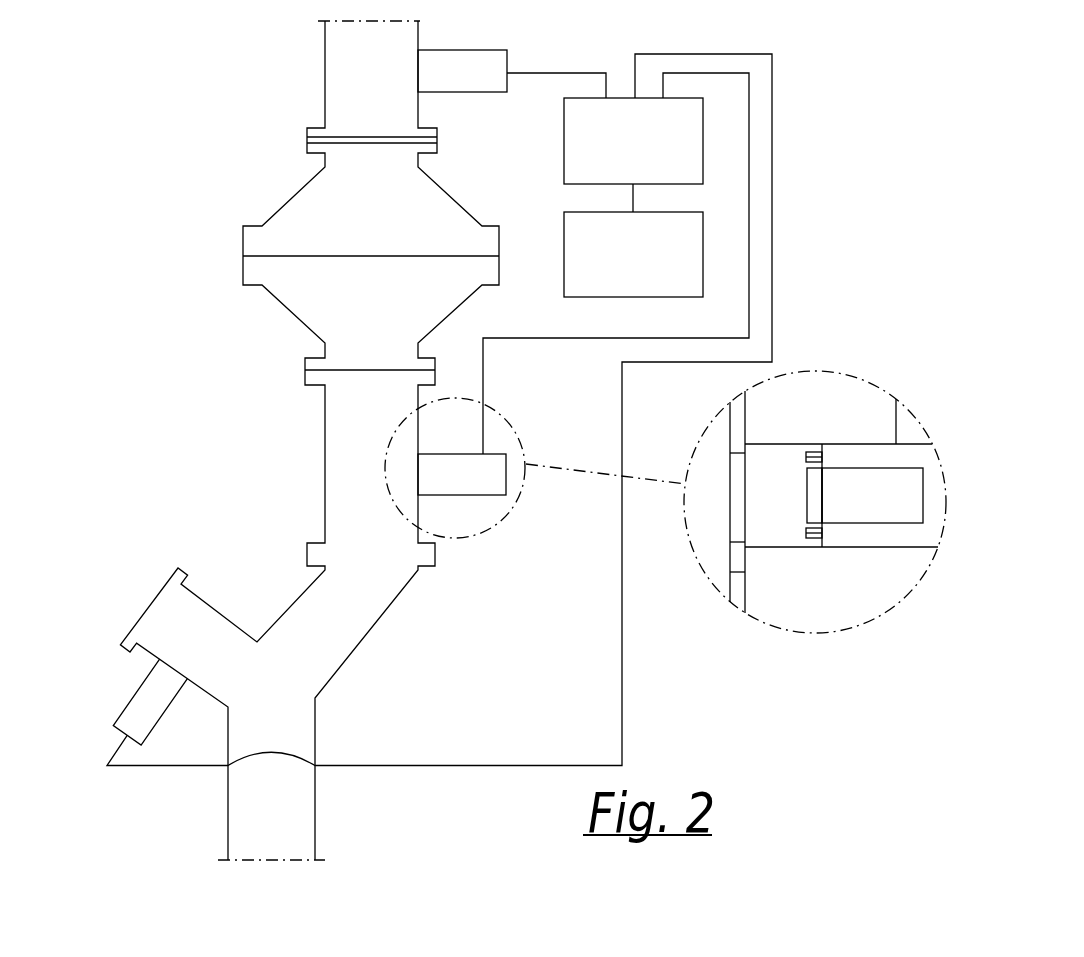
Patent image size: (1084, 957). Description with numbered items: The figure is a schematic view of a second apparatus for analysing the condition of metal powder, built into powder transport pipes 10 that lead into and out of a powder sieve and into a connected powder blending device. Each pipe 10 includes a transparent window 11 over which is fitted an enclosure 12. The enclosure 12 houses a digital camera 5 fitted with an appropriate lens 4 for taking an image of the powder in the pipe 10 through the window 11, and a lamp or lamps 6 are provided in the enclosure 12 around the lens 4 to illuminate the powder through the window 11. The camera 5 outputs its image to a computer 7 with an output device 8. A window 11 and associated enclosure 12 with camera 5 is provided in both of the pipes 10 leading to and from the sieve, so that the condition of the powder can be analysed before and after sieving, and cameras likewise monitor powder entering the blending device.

The lens 4 is at (813, 488).
The digital camera 5 is at (853, 493).
The lamp 6 is at (807, 533).
The computer 7 is at (633, 141).
The output device 8 is at (633, 240).
The powder transport pipe 10 is at (347, 69).
The transparent window 11 is at (420, 72).
The enclosure 12 is at (458, 50).